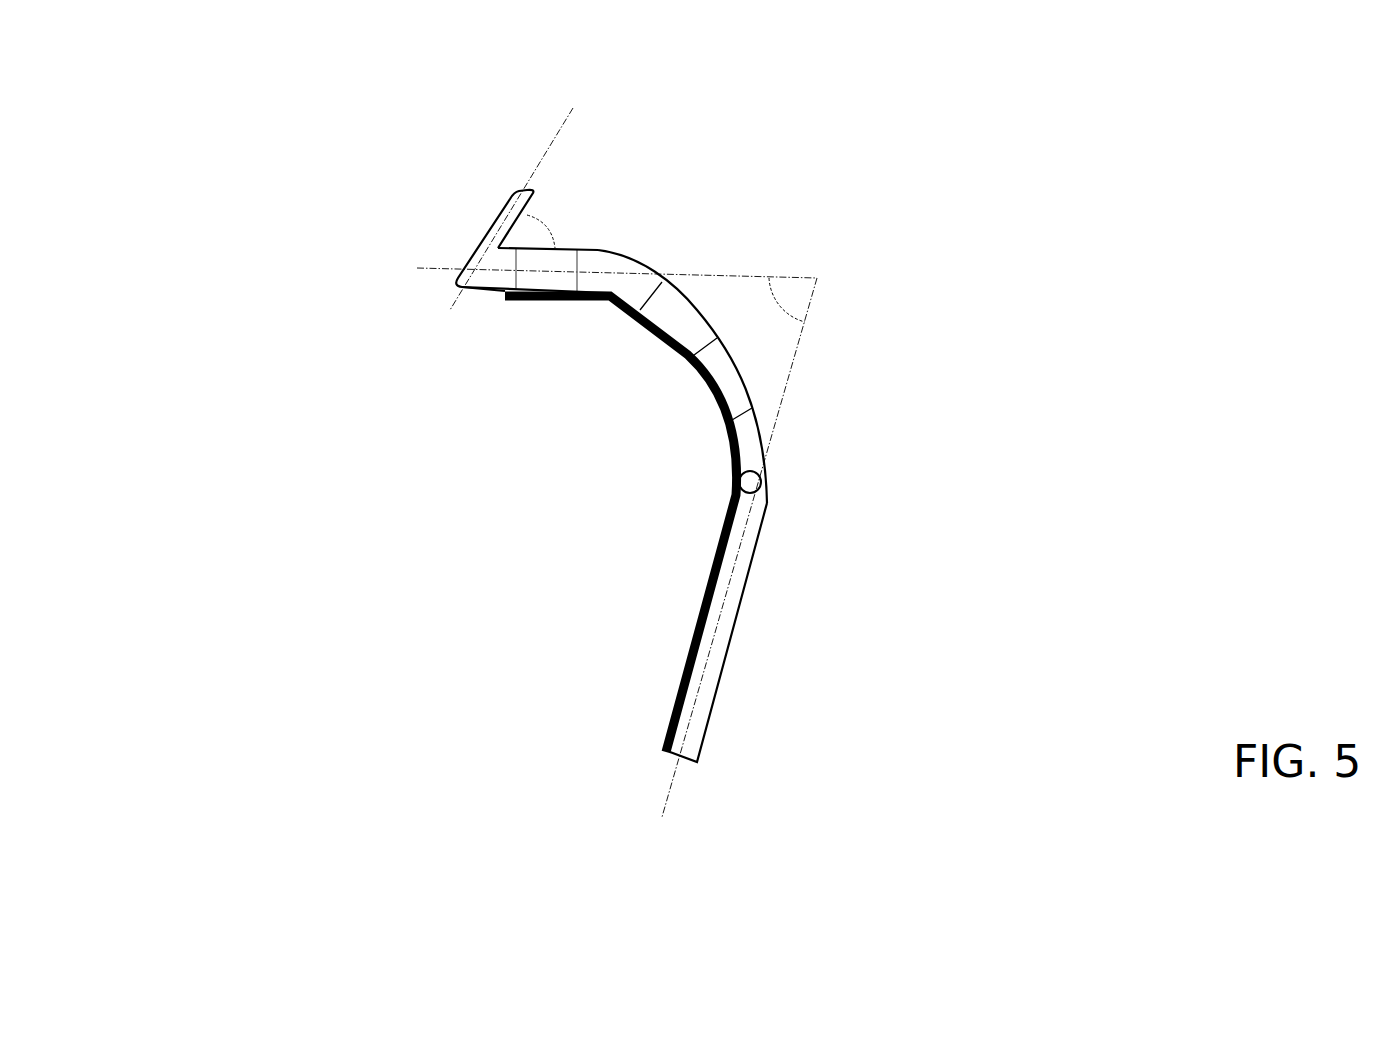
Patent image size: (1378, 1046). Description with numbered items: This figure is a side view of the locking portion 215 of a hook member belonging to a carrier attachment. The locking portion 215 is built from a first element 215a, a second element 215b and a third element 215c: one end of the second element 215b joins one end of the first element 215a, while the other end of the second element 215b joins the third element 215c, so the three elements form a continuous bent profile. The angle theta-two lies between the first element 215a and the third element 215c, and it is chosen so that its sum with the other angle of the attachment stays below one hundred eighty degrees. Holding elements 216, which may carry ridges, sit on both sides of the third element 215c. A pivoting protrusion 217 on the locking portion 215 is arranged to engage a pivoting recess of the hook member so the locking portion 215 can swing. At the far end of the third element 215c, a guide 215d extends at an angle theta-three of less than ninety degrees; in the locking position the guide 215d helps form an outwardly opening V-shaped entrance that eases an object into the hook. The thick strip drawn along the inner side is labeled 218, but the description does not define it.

The locking portion 215 is at (540, 420).
The first element 215a is at (723, 635).
The second element 215b is at (720, 372).
The third element 215c is at (548, 268).
The guide 215d is at (497, 215).
The holding element 216 is at (580, 277).
The pivoting protrusion 217 is at (763, 483).
The reinforcing strip 218 is at (725, 462).